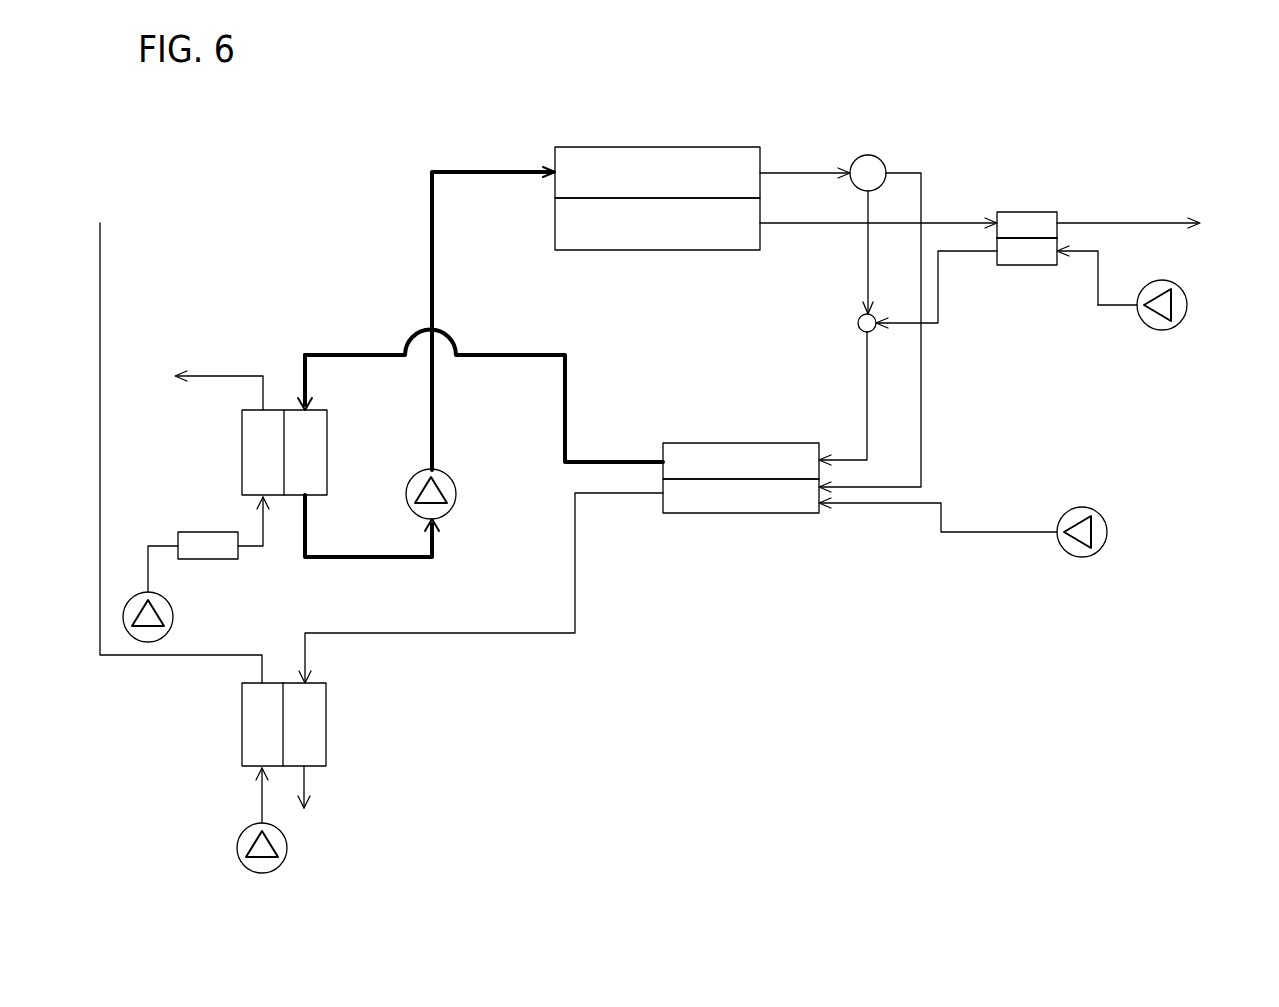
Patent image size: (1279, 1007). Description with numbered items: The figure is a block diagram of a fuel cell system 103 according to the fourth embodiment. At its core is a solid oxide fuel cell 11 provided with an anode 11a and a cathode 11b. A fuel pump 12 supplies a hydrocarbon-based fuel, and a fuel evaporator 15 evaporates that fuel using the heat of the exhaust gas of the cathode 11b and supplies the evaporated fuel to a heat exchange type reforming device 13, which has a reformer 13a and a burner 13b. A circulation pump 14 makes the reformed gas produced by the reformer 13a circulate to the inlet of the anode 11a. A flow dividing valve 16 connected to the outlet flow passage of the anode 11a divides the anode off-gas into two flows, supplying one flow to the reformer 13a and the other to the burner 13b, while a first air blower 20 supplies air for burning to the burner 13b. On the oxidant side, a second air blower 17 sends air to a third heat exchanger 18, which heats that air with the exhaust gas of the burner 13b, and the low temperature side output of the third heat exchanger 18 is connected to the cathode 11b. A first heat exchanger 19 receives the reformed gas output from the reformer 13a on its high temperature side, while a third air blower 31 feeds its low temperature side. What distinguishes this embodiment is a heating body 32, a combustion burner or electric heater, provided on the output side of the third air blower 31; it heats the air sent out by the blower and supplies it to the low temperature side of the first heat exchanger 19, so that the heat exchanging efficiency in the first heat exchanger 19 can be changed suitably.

The fuel cell system 103 is at (1001, 103).
The solid oxide fuel cell 11 is at (657, 142).
The anode 11a is at (661, 153).
The cathode 11b is at (725, 210).
The fuel pump 12 is at (1187, 305).
The heat exchange type reforming device 13 is at (741, 421).
The reformer 13a is at (722, 450).
The burner 13b is at (789, 487).
The circulation pump 14 is at (456, 493).
The fuel evaporator 15 is at (1032, 212).
The flow dividing valve 16 is at (868, 155).
The second air blower 17 is at (237, 845).
The third heat exchanger 18 is at (242, 725).
The first heat exchanger 19 is at (242, 436).
The first air blower 20 is at (1107, 532).
The third air blower 31 is at (173, 617).
The heating body 32 is at (210, 532).